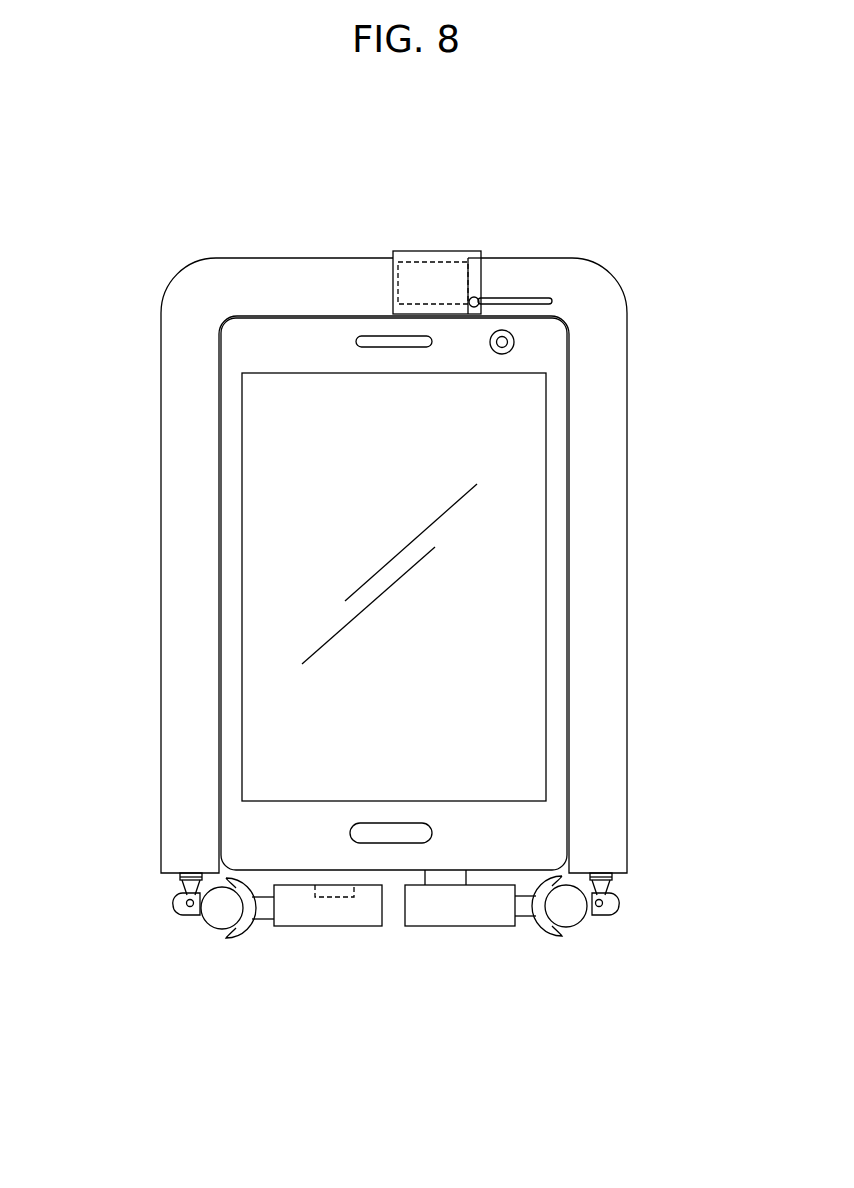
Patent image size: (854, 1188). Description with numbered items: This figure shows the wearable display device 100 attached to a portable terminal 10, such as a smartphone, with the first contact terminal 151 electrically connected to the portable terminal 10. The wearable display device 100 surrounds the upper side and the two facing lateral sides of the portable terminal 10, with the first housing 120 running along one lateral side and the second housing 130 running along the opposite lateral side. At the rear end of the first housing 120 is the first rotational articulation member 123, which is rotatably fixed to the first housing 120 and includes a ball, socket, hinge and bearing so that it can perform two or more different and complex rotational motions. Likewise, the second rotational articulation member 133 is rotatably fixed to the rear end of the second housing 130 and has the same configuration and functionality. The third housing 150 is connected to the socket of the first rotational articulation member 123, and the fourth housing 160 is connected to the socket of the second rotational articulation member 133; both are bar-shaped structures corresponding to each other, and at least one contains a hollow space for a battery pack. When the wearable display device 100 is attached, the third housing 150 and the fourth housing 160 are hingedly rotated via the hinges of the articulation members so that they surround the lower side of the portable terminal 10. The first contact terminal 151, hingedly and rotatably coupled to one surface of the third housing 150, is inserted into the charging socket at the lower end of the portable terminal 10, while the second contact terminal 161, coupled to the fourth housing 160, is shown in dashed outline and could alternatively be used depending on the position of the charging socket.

The wearable display device 100 is at (542, 248).
The portable terminal 10 is at (568, 428).
The first housing 120 is at (628, 587).
The second housing 130 is at (177, 617).
The first rotational articulation member 123 is at (640, 893).
The second rotational articulation member 133 is at (158, 898).
The third housing 150 is at (500, 926).
The first contact terminal 151 is at (445, 878).
The fourth housing 160 is at (287, 926).
The second contact terminal 161 is at (333, 897).